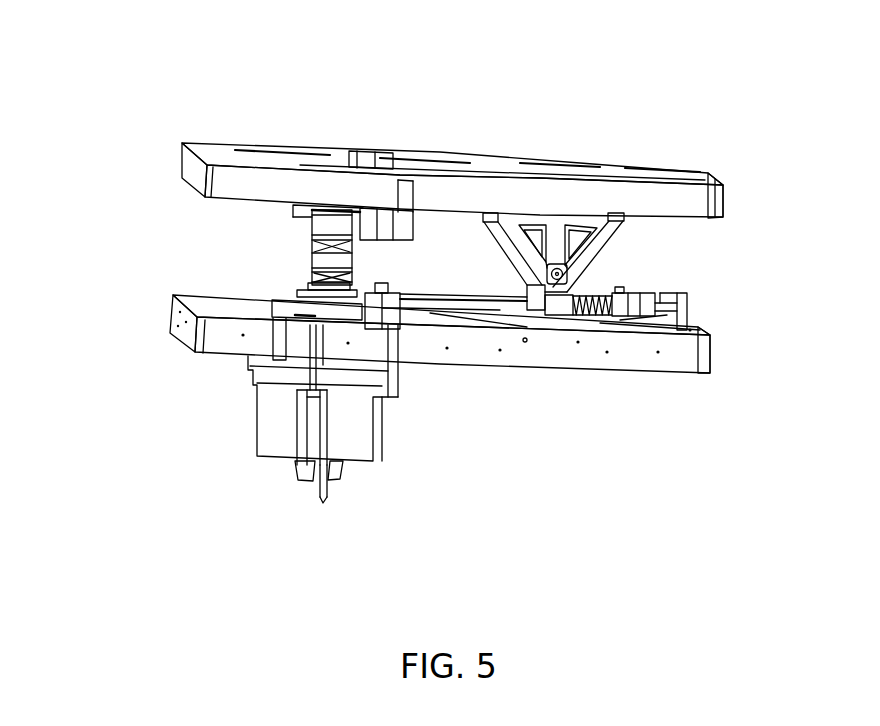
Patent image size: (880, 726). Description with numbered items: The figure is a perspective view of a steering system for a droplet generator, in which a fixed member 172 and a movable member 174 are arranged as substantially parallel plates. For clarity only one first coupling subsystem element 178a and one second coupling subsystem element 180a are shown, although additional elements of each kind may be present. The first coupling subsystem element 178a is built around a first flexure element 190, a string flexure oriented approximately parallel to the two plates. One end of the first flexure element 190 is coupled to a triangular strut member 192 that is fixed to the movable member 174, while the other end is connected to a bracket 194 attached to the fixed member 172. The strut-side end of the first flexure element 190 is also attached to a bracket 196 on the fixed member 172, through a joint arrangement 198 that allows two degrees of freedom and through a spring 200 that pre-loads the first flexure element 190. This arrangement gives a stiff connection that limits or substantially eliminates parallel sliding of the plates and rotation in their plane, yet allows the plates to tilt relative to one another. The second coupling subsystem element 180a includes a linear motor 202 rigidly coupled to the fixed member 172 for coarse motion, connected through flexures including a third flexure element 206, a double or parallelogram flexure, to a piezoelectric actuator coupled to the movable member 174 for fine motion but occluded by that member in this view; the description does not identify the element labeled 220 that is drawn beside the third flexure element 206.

The movable member 174 is at (473, 150).
The triangular strut member 192 is at (600, 244).
The first coupling subsystem element 178a is at (600, 274).
The third flexure element 206 is at (360, 222).
The flexure column 220 is at (312, 263).
The second coupling subsystem element 180a is at (208, 275).
The fixed member 172 is at (218, 338).
The bracket 194 is at (402, 319).
The first flexure element 190 is at (500, 300).
The joint arrangement 198 is at (628, 314).
The spring 200 is at (598, 313).
The bracket 196 is at (658, 338).
The linear motor 202 is at (390, 442).